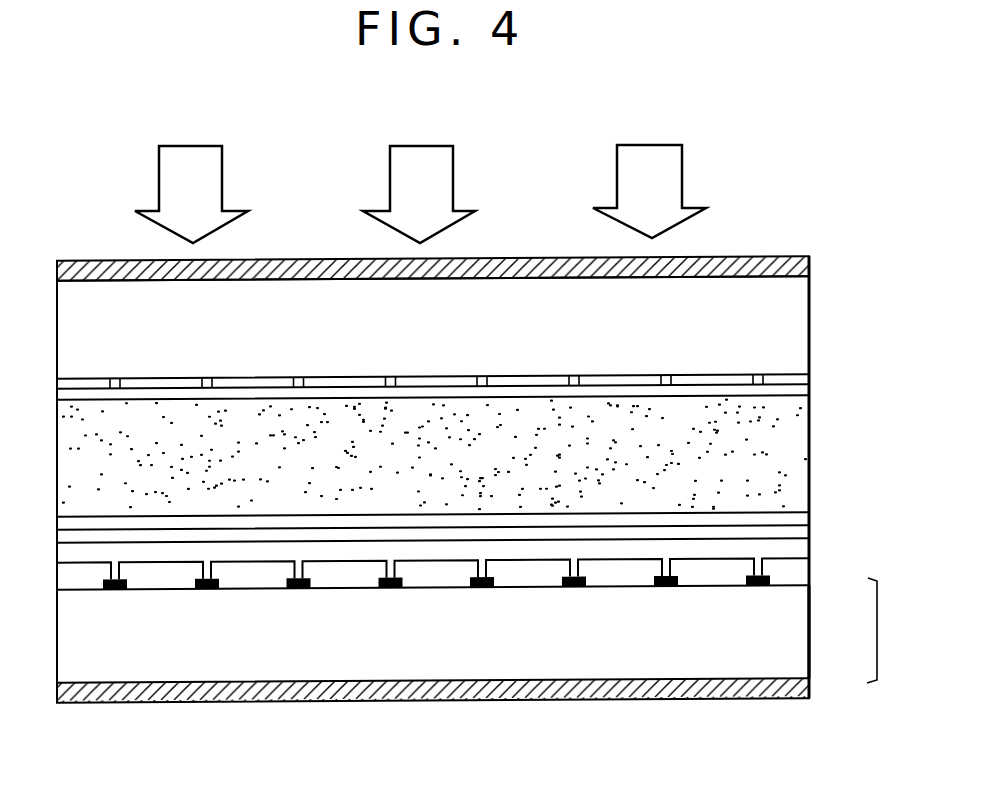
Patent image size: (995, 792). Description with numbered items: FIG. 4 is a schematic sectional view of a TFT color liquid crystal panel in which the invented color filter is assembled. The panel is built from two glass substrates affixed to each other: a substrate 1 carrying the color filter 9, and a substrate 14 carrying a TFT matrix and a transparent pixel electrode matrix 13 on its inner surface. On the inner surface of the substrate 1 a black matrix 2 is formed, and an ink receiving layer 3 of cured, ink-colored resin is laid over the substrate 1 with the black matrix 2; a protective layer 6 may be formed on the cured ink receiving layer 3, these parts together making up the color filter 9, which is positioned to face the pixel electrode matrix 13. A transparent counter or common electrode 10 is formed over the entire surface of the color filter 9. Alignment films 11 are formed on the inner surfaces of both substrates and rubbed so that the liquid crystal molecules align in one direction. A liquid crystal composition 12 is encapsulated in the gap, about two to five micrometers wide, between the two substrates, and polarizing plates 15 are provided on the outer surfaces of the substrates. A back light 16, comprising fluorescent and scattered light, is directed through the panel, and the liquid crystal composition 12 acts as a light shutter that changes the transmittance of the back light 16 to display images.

The substrate 1 is at (793, 653).
The black matrix 2 is at (763, 588).
The ink receiving layer 3 is at (802, 570).
The protective layer 6 is at (803, 550).
The color filter 9 is at (891, 630).
The transparent counter or common electrode 10 is at (803, 532).
The alignment films 11 is at (805, 391).
The liquid crystal composition 12 is at (797, 467).
The transparent pixel electrode matrix 13 is at (805, 380).
The substrate provided with a TFT matrix 14 is at (793, 320).
The polarizing plates 15 is at (797, 266).
The back light 16 is at (670, 180).